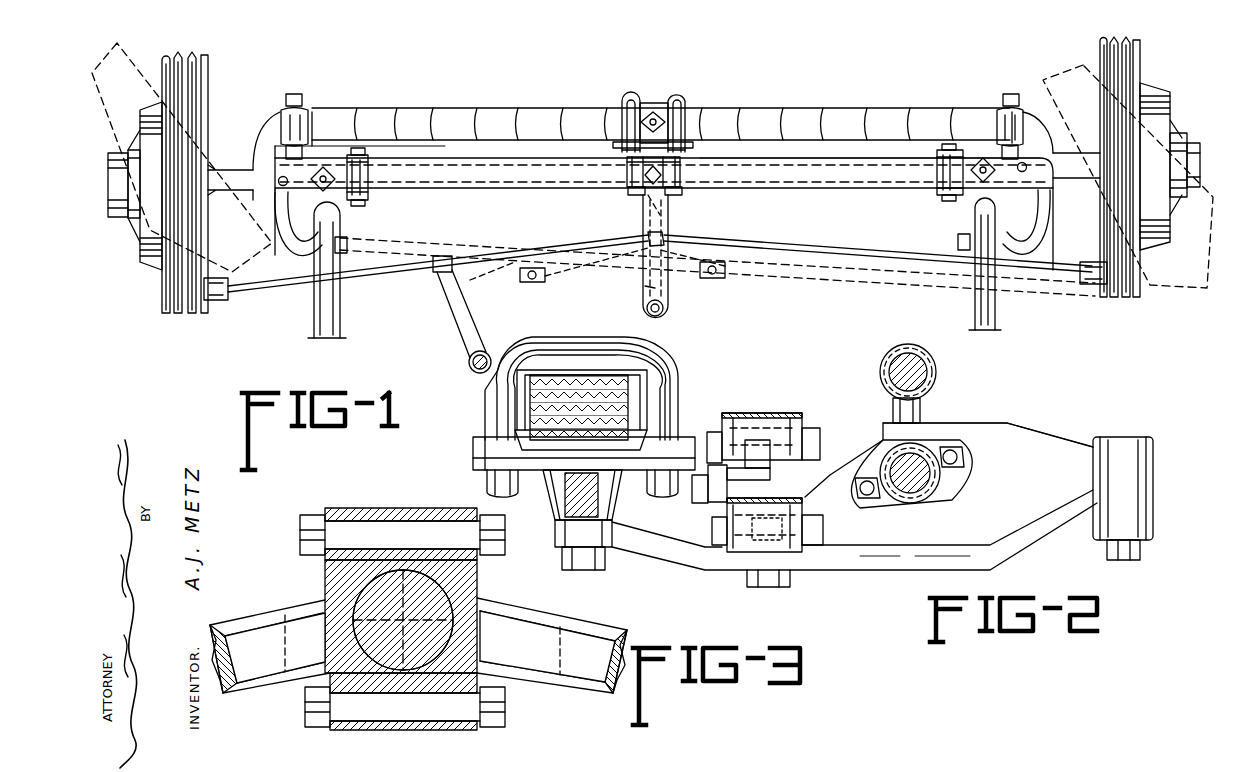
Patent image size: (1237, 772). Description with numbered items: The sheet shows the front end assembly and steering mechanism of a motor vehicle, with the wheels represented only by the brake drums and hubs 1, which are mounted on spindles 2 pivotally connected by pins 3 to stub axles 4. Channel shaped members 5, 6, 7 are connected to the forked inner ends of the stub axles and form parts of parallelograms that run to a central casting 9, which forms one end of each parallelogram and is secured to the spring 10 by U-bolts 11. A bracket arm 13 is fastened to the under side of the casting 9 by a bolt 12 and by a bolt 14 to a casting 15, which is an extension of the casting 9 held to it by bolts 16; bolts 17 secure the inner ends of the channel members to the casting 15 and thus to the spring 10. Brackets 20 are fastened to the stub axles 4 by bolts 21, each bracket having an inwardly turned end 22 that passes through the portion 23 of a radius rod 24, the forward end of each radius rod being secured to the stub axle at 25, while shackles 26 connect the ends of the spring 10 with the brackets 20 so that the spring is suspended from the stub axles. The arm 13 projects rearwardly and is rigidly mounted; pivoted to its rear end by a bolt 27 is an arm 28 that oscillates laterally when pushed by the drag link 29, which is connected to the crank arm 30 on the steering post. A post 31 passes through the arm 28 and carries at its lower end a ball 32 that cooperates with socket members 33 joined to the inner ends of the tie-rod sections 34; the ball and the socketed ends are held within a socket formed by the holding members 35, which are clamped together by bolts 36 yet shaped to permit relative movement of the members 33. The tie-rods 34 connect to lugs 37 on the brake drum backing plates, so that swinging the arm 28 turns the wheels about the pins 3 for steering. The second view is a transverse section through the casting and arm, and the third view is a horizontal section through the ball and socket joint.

In FIG. 1, the brake drums and hubs 1 is at (143, 291).
In FIG. 1, the spindles 2 is at (625, 52).
In FIG. 2, the pins 3 is at (827, 463).
In FIG. 1, the stub axles 4 is at (233, 178).
In FIG. 1, the channel shaped member 5 is at (287, 332).
In FIG. 2, the channel shaped member 5 is at (758, 413).
In FIG. 2, the channel shaped member 6 is at (785, 500).
In FIG. 1, the channel shaped member 7 is at (800, 165).
In FIG. 1, the central casting 9 is at (653, 103).
In FIG. 2, the central casting 9 is at (556, 495).
In FIG. 1, the spring 10 is at (768, 106).
In FIG. 2, the spring 10 is at (580, 378).
In FIG. 1, the U-bolts 11 is at (630, 95).
In FIG. 2, the U-bolts 11 is at (672, 360).
In FIG. 1, the bolt 12 is at (660, 120).
In FIG. 2, the bolt 12 is at (588, 570).
In FIG. 1, the bracket arm 13 is at (670, 215).
In FIG. 2, the bracket arm 13 is at (900, 560).
In FIG. 1, the bolt 14 is at (648, 212).
In FIG. 2, the bolt 14 is at (785, 568).
In FIG. 2, the casting 15 is at (790, 418).
In FIG. 2, the bolts 16 is at (712, 500).
In FIG. 2, the bolts 17 is at (714, 432).
In FIG. 1, the brackets 20 is at (270, 145).
In FIG. 1, the bolts 21 is at (286, 186).
In FIG. 1, the inwardly turned end 22 is at (306, 248).
In FIG. 1, the portion of the radius rod 23 is at (347, 243).
In FIG. 1, the radius rod 24 is at (342, 330).
In FIG. 1, the connection of radius rod to stub axle 25 is at (325, 170).
In FIG. 1, the shackles 26 is at (312, 98).
In FIG. 1, the bolt 27 is at (668, 308).
In FIG. 2, the bolt 27 is at (1120, 440).
In FIG. 1, the arm 28 is at (645, 286).
In FIG. 2, the arm 28 is at (1052, 440).
In FIG. 1, the drag link 29 is at (570, 248).
In FIG. 2, the drag link 29 is at (936, 370).
In FIG. 1, the crank arm 30 is at (470, 340).
In FIG. 2, the post 31 is at (922, 412).
In FIG. 3, the ball 32 is at (372, 603).
In FIG. 3, the socket members 33 is at (322, 612).
In FIG. 1, the tie-rod sections 34 is at (420, 262).
In FIG. 2, the tie-rod sections 34 is at (910, 492).
In FIG. 3, the tie-rod sections 34 is at (218, 623).
In FIG. 2, the holding members 35 is at (950, 480).
In FIG. 3, the holding members 35 is at (412, 512).
In FIG. 2, the bolts 36 is at (958, 452).
In FIG. 3, the bolts 36 is at (305, 533).
In FIG. 1, the lugs 37 is at (232, 300).